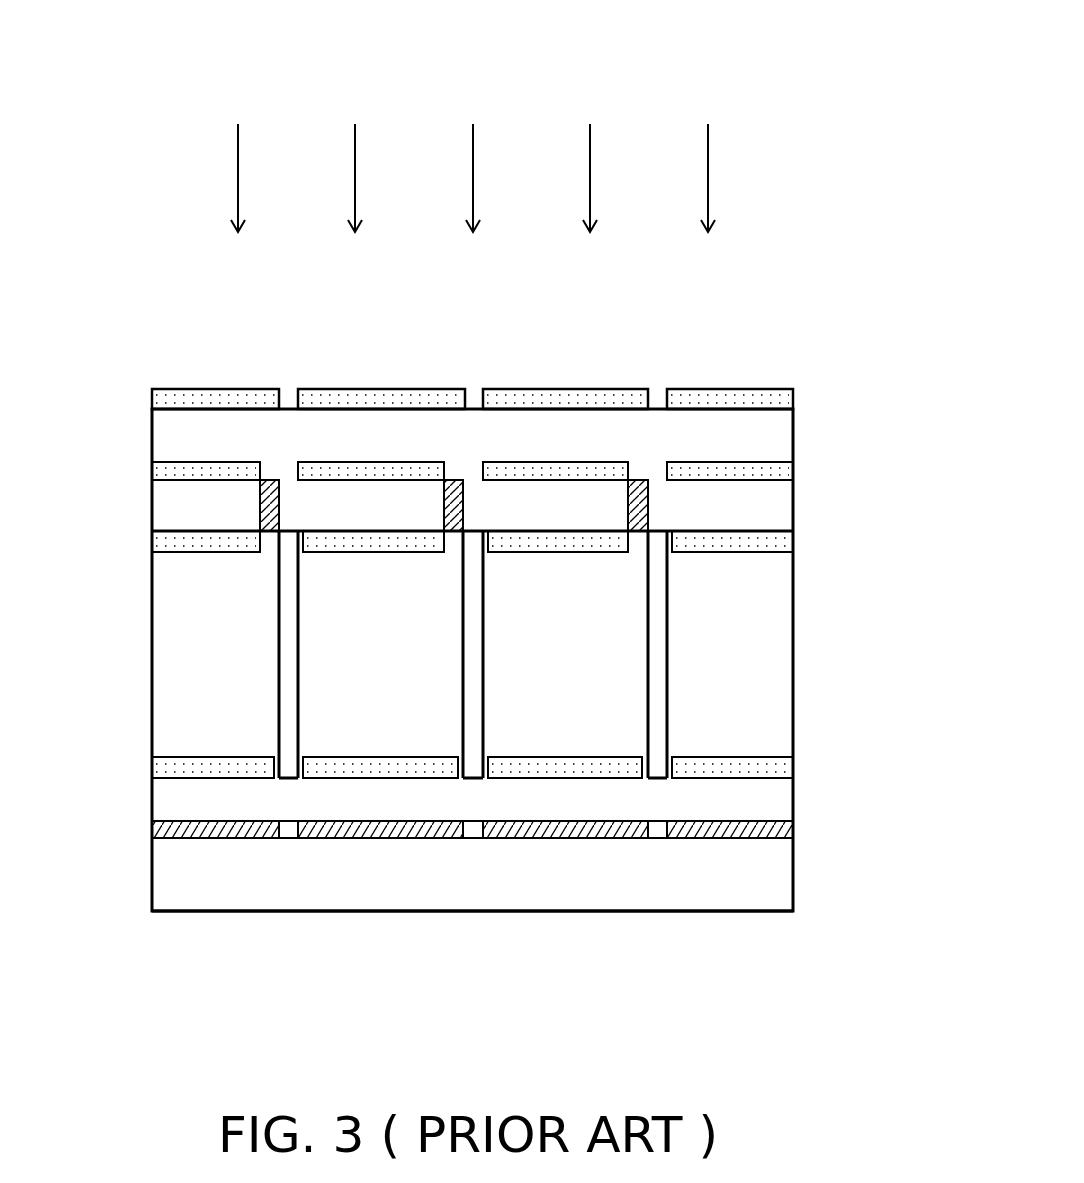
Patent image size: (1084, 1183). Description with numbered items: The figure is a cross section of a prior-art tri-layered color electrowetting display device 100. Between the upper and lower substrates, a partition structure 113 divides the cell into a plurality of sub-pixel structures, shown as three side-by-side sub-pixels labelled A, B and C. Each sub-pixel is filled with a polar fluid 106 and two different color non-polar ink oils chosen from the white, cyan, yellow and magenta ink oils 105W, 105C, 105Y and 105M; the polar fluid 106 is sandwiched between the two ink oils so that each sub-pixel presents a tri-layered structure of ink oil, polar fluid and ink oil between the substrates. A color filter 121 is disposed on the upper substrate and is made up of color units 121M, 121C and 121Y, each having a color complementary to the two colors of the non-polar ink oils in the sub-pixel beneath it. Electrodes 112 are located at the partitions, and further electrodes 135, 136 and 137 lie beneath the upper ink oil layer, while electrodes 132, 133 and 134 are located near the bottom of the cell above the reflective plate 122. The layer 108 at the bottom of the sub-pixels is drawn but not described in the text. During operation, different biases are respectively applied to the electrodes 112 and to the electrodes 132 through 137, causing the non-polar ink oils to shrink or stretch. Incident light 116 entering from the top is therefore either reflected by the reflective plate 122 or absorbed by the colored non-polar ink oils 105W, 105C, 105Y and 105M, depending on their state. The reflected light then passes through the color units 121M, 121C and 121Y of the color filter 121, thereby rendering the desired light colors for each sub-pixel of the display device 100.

The tri-layered color electrowetting display device 100 is at (855, 70).
The incident light 116 is at (710, 165).
The color filter 121 is at (168, 400).
The magenta color unit of the color filter 121M is at (320, 400).
The cyan color unit of the color filter 121C is at (503, 400).
The yellow color unit of the color filter 121Y is at (762, 400).
The electrode 112 is at (267, 485).
The electrode 135 is at (374, 470).
The electrode 136 is at (560, 470).
The electrode 137 is at (715, 470).
The white non-polar ink oil 105W is at (163, 542).
The magenta non-polar ink oil 105M is at (780, 541).
The cyan non-polar ink oil 105C is at (357, 548).
The yellow non-polar ink oil 105Y is at (590, 543).
The polar fluid 106 is at (323, 712).
The partition structure 113 is at (658, 712).
The electrode 134 is at (780, 830).
The reflective plate 122 is at (780, 878).
The planarization layer 108 is at (212, 807).
The electrode 132 is at (328, 830).
The electrode 133 is at (512, 832).